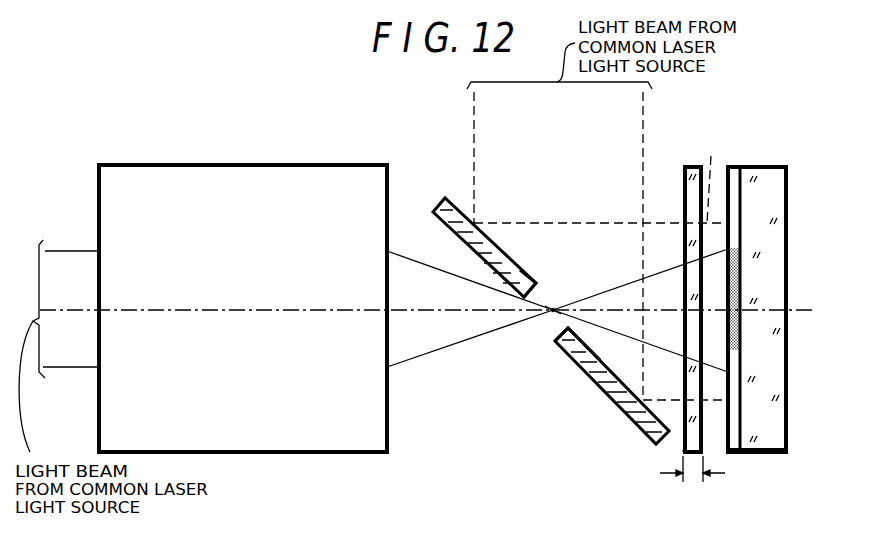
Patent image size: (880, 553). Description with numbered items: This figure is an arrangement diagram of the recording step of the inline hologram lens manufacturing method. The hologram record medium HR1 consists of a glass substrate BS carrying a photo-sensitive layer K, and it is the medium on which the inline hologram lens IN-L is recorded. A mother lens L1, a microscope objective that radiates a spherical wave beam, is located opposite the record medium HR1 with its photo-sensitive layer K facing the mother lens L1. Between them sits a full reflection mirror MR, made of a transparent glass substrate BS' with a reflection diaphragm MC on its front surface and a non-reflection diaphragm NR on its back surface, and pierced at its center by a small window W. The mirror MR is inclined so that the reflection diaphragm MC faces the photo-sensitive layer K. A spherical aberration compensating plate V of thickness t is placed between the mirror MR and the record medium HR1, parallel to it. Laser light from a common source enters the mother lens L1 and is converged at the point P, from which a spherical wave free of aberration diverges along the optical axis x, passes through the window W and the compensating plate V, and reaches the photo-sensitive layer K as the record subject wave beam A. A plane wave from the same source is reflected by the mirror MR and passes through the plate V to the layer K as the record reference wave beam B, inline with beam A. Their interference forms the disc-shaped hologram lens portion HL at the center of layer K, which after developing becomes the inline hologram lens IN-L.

The mother lens L1 is at (236, 165).
The transparent substrate BS' is at (469, 223).
The reflection diaphragm MC is at (528, 284).
The convergence point P is at (555, 300).
The record subject wave beam A is at (661, 275).
The small window W is at (553, 314).
The non-reflection diaphragm NR is at (578, 361).
The full reflection mirror MR is at (629, 408).
The record reference wave beam B is at (697, 167).
The photo-sensitive layer K is at (733, 167).
The glass substrate BS is at (765, 285).
The hologram record medium HR1 is at (779, 256).
The optical axis x is at (806, 306).
The inline hologram lens portion HL is at (727, 353).
The spherical aberration compensating plate V is at (683, 447).
The thickness t is at (694, 478).
The inline hologram lens IN-L is at (766, 456).